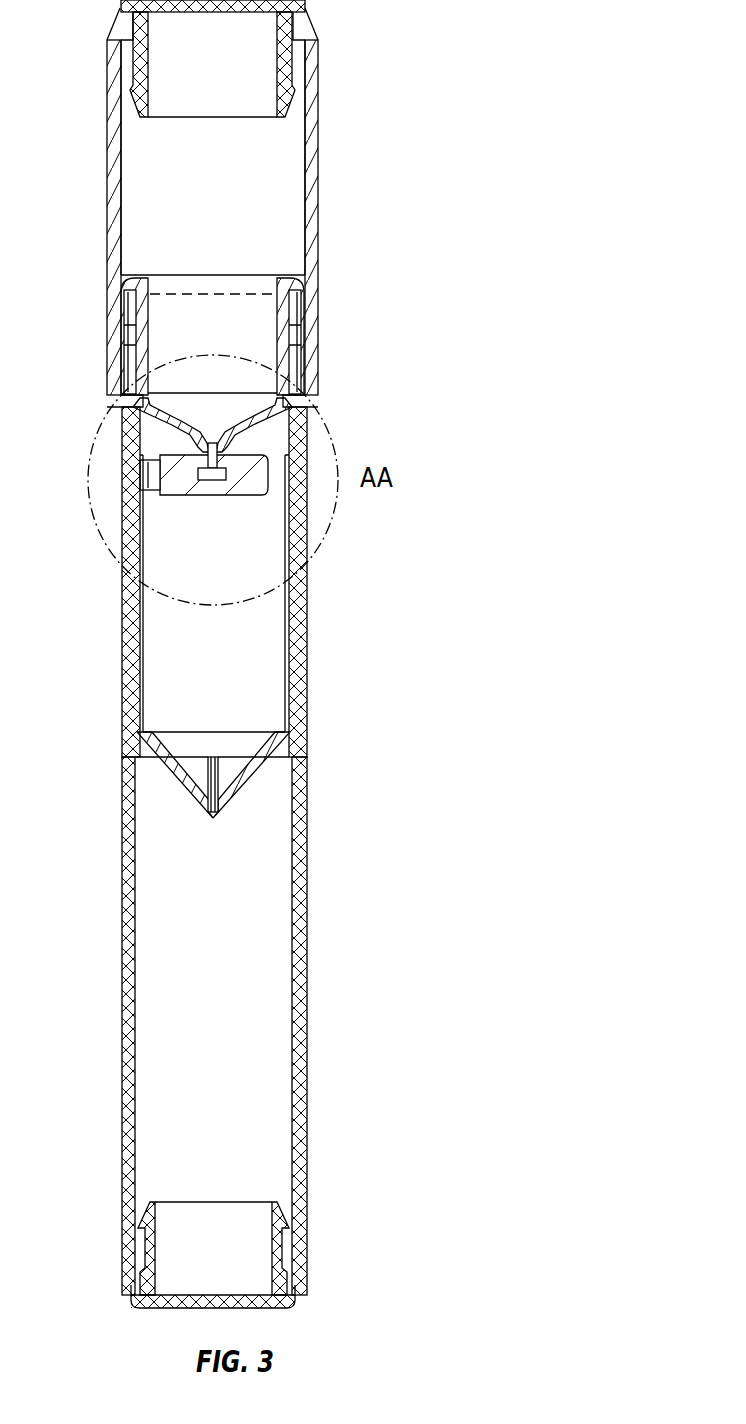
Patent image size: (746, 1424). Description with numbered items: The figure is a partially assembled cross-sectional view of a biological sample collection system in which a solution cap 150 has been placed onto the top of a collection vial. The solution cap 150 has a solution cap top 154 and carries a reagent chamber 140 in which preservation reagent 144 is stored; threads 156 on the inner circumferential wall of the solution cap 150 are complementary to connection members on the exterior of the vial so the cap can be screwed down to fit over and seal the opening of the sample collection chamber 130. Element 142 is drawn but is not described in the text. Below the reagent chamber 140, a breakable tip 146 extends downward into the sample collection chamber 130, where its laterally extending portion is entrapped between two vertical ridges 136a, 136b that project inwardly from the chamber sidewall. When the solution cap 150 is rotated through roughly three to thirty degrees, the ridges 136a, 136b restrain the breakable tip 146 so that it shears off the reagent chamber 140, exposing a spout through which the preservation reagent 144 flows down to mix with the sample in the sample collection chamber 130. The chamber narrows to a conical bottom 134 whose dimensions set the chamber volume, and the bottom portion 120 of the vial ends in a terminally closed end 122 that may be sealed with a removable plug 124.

The solution cap 150 is at (324, 34).
The solution cap top 154 is at (292, 110).
The reagent chamber 140 is at (270, 182).
The cartridge 142 is at (264, 333).
The preservation reagent 144 is at (226, 337).
The threads 156 is at (302, 346).
The breakable tip 146 is at (177, 483).
The vertical ridge 136a is at (140, 600).
The vertical ridge 136b is at (293, 561).
The sample collection chamber 130 is at (237, 673).
The conical bottom 134 is at (250, 787).
The bottom portion 120 is at (312, 1090).
The removable plug 124 is at (290, 1250).
The terminally closed end 122 is at (303, 1302).